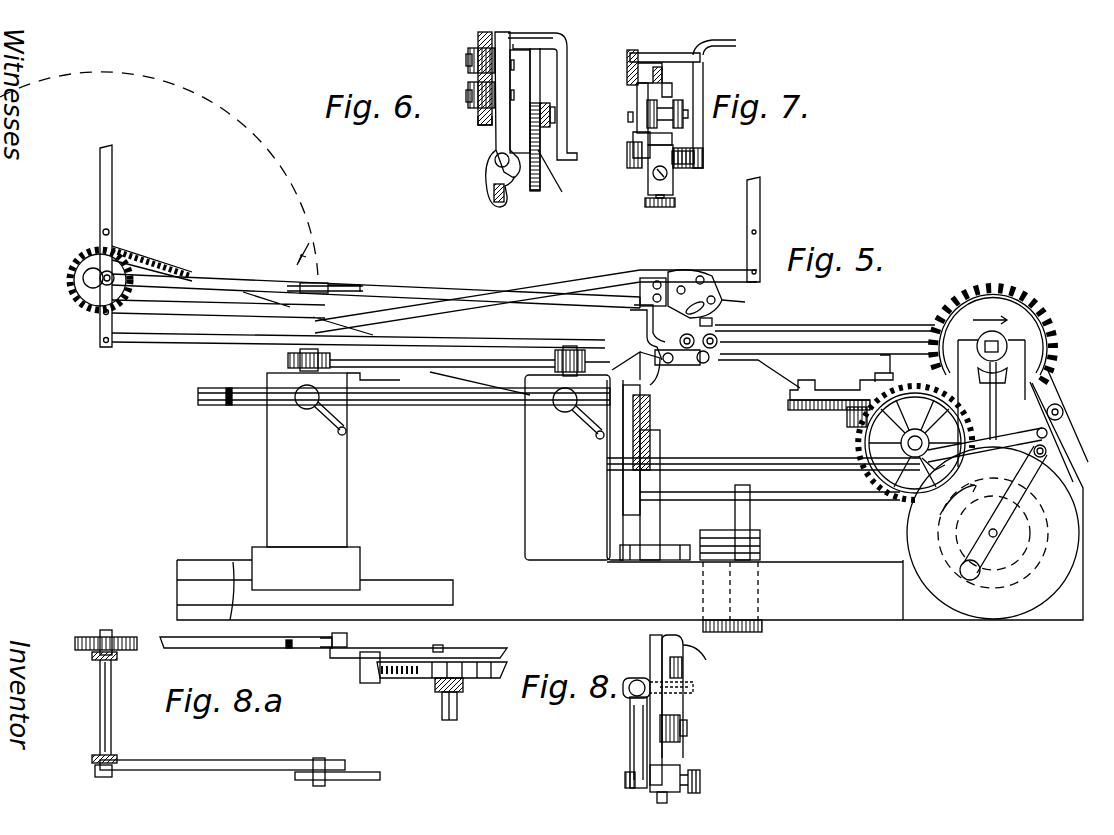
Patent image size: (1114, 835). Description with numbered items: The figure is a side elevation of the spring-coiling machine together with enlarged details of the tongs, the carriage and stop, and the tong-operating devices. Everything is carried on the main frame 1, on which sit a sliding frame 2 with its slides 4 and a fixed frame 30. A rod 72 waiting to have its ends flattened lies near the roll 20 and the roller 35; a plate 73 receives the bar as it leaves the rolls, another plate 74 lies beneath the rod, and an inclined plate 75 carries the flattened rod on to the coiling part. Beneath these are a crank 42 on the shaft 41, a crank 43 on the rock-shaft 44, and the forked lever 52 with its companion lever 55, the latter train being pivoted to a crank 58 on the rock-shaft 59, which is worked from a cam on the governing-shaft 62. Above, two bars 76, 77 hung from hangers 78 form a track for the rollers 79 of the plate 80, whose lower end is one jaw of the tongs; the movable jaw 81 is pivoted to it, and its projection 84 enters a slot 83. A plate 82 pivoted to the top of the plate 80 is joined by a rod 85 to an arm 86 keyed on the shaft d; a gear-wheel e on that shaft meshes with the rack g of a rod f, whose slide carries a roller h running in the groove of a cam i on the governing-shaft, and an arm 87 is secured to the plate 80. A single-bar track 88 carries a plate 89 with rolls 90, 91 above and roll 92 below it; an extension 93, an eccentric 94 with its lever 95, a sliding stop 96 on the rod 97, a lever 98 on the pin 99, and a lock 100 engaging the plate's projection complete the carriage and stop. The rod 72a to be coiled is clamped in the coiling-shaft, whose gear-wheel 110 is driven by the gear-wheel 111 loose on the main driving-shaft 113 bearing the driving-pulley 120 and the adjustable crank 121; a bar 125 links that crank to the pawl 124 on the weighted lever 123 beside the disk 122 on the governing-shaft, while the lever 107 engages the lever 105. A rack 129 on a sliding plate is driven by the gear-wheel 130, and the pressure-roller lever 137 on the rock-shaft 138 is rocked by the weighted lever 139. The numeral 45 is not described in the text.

In FIG. 5, the main frame 1 is at (630, 507).
In FIG. 5, the sliding frame 2 is at (307, 460).
In FIG. 5, the slides 4 is at (306, 568).
In FIG. 5, the roll for tapering 20 is at (290, 360).
In FIG. 5, the fixed frame 30 is at (567, 467).
In FIG. 5, the roller 35 is at (558, 358).
In FIG. 5, the shaft 41 is at (440, 404).
In FIG. 5, the crank 42 is at (642, 418).
In FIG. 5, the crank 43 is at (627, 482).
In FIG. 5, the rock-shaft 44 is at (716, 466).
In FIG. 5, the post 45 is at (660, 454).
In FIG. 5, the forked lever 52 is at (688, 556).
In FIG. 5, the lever 55 is at (635, 545).
In FIG. 5, the crank 58 is at (750, 512).
In FIG. 5, the rock-shaft 59 is at (786, 500).
In FIG. 5, the governing-shaft 62 is at (997, 536).
In FIG. 8A, the governing-shaft 62 is at (458, 704).
In FIG. 6, the rod 72 is at (499, 206).
In FIG. 7, the rod 72 is at (658, 65).
In FIG. 5, the rod 72 is at (450, 368).
In FIG. 8, the rod 72 is at (652, 652).
In FIG. 5, the rod to be coiled 72a is at (828, 332).
In FIG. 5, the plate 73 is at (480, 381).
In FIG. 5, the plate 74 is at (375, 379).
In FIG. 5, the inclined plate 75 is at (626, 359).
In FIG. 6, the bar 76 is at (479, 38).
In FIG. 5, the bar 76 is at (572, 282).
In FIG. 6, the bar 77 is at (478, 118).
In FIG. 5, the bar 77 is at (170, 344).
In FIG. 5, the hangers 78 is at (108, 208).
In FIG. 8A, the hangers 78 is at (118, 657).
In FIG. 6, the rollers 79 is at (468, 60).
In FIG. 6, the plate 80 is at (498, 134).
In FIG. 5, the plate 80 is at (656, 276).
In FIG. 6, the movable jaw 81 is at (520, 170).
In FIG. 6, the plate 82 is at (560, 126).
In FIG. 5, the plate 82 is at (700, 274).
In FIG. 5, the slot 83 is at (714, 312).
In FIG. 6, the projection 84 is at (524, 147).
In FIG. 6, the rod or bar 85 is at (550, 122).
In FIG. 5, the rod or bar 85 is at (357, 280).
In FIG. 8A, the rod or bar 85 is at (368, 774).
In FIG. 5, the arm 86 is at (192, 284).
In FIG. 8A, the arm 86 is at (208, 762).
In FIG. 6, the arm 87 is at (560, 108).
In FIG. 5, the arm 87 is at (640, 292).
In FIG. 7, the track 88 is at (676, 138).
In FIG. 5, the track 88 is at (818, 345).
In FIG. 8, the track 88 is at (704, 658).
In FIG. 7, the plate 89 is at (640, 128).
In FIG. 5, the plate 89 is at (718, 342).
In FIG. 8, the plate 89 is at (640, 710).
In FIG. 7, the roll 90 is at (672, 106).
In FIG. 5, the roll 90 is at (699, 366).
In FIG. 8, the roll 90 is at (688, 730).
In FIG. 5, the roll 91 is at (715, 360).
In FIG. 8, the roll 91 is at (682, 696).
In FIG. 5, the roll 92 is at (708, 370).
In FIG. 7, the extension 93 is at (667, 80).
In FIG. 7, the eccentric 94 is at (628, 85).
In FIG. 7, the lever 95 is at (697, 53).
In FIG. 5, the lever 95 is at (722, 300).
In FIG. 8, the lever 95 is at (694, 688).
In FIG. 7, the sliding stop 96 is at (673, 170).
In FIG. 5, the sliding stop 96 is at (670, 366).
In FIG. 5, the rod 97 is at (740, 360).
In FIG. 7, the lever 98 is at (704, 160).
In FIG. 5, the lever 98 is at (640, 322).
In FIG. 8, the lever 98 is at (700, 779).
In FIG. 5, the pin 99 is at (648, 370).
In FIG. 8, the pin 99 is at (684, 772).
In FIG. 7, the lock 100 is at (630, 168).
In FIG. 5, the lock 100 is at (684, 370).
In FIG. 8, the lock 100 is at (626, 778).
In FIG. 5, the lever 105 is at (998, 353).
In FIG. 5, the lever 107 is at (998, 390).
In FIG. 5, the gear-wheel 110 is at (1004, 294).
In FIG. 5, the gear-wheel 111 is at (888, 486).
In FIG. 5, the main driving-shaft 113 is at (915, 443).
In FIG. 5, the driving-pulley 120 is at (991, 403).
In FIG. 5, the crank 121 is at (926, 443).
In FIG. 5, the disk 122 is at (948, 535).
In FIG. 5, the lever 123 is at (1020, 484).
In FIG. 5, the pawl 124 is at (1048, 438).
In FIG. 5, the bar 125 is at (1002, 440).
In FIG. 5, the rack 129 is at (787, 410).
In FIG. 5, the gear-wheel 130 is at (852, 416).
In FIG. 5, the lever 137 is at (1052, 386).
In FIG. 5, the rock-shaft 138 is at (1063, 411).
In FIG. 5, the lever 139 is at (1062, 420).
In FIG. 5, the gear-wheel e is at (100, 280).
In FIG. 8A, the gear-wheel e is at (120, 638).
In FIG. 5, the rack g is at (135, 258).
In FIG. 8A, the rack g is at (486, 650).
In FIG. 5, the shaft d is at (90, 290).
In FIG. 8A, the shaft d is at (108, 716).
In FIG. 5, the rod or bar f is at (303, 251).
In FIG. 8A, the rod or bar f is at (250, 648).
In FIG. 8A, the roller h is at (430, 637).
In FIG. 8A, the cam i is at (408, 674).